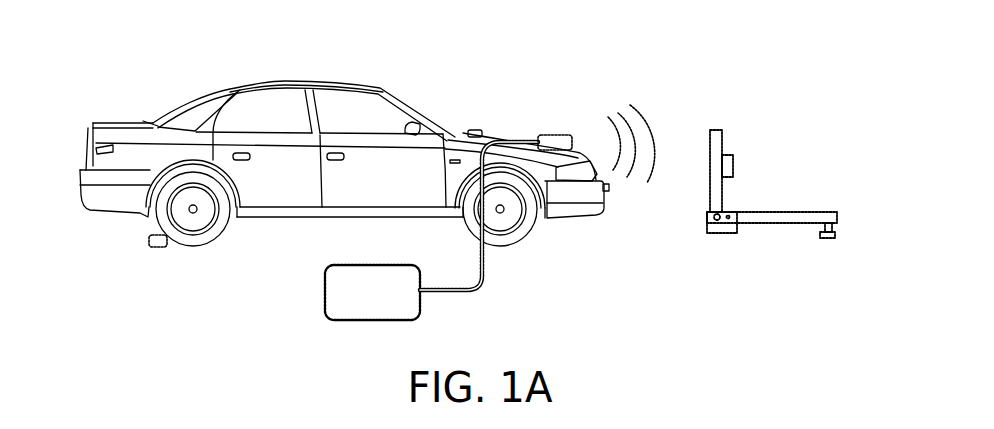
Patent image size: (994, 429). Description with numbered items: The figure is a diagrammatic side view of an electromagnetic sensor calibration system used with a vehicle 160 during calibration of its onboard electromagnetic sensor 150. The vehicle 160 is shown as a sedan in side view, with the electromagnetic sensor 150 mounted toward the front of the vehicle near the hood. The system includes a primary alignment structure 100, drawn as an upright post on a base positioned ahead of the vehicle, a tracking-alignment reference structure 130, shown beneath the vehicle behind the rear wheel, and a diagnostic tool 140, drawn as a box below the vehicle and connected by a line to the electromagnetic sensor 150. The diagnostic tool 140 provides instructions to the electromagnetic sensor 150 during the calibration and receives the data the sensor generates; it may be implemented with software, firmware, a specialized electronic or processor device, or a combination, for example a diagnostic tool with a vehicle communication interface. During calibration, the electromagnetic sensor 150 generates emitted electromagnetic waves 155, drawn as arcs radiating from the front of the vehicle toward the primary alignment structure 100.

The primary alignment structure 100 is at (797, 103).
The tracking-alignment reference structure 130 is at (163, 248).
The diagnostic tool 140 is at (393, 304).
The electromagnetic sensor 150 is at (555, 135).
The emitted electromagnetic waves 155 is at (645, 122).
The vehicle 160 is at (285, 78).